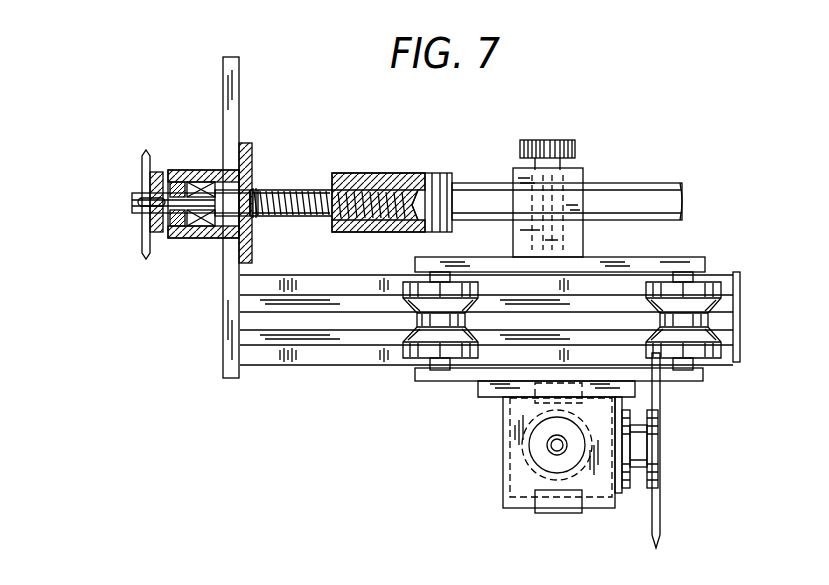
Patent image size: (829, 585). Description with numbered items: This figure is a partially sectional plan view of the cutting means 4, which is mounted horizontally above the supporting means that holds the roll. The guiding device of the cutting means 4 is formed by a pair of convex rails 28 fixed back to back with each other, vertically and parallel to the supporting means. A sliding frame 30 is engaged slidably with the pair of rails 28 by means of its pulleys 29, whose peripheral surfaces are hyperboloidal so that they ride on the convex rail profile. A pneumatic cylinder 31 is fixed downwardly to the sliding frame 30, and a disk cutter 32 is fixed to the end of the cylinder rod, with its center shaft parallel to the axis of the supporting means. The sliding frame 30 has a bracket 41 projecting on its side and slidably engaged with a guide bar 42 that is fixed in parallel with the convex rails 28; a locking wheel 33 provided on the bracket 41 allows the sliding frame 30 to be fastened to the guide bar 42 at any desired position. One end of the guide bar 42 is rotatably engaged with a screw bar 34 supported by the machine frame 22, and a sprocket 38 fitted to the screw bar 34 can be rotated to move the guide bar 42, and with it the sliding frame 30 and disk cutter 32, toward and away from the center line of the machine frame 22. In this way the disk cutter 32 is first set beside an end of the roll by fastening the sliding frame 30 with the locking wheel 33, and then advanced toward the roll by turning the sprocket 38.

The cutting means 4 is at (395, 445).
The machine frame 22 is at (236, 101).
The convex rails 28 is at (328, 320).
The pulleys 29 is at (418, 355).
The sliding frame 30 is at (418, 265).
The pneumatic cylinder 31 is at (525, 453).
The disk cutter 32 is at (655, 510).
The locking wheel 33 is at (546, 142).
The screw bar 34 is at (289, 196).
The sprocket 38 is at (142, 226).
The bracket 41 is at (580, 240).
The guide bar 42 is at (641, 186).